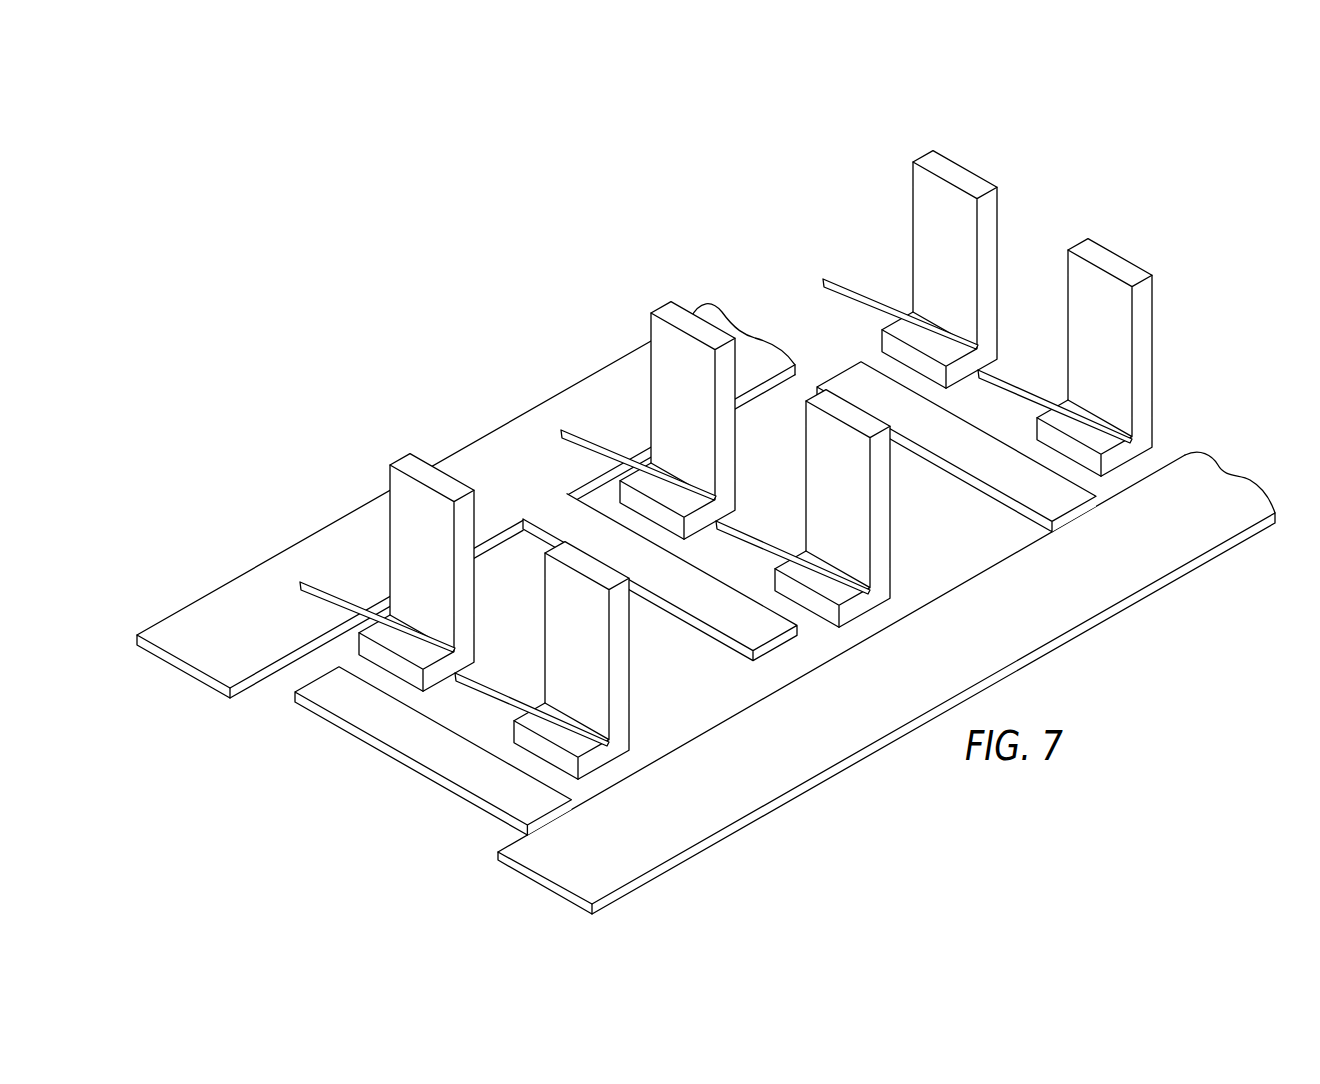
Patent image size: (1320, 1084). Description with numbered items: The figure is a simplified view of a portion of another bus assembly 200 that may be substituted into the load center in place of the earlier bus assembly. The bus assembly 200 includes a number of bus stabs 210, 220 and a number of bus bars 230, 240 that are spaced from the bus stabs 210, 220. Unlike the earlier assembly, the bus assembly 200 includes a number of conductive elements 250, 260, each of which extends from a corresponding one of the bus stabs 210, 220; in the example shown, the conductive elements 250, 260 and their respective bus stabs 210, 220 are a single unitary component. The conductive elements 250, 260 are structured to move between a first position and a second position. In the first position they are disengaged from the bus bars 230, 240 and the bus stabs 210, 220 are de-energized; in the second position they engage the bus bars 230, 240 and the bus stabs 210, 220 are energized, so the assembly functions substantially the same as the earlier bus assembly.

The bus assembly 200 is at (697, 515).
The bus stab 210 is at (623, 677).
The bus stab 220 is at (408, 462).
The bus bar 230 is at (200, 685).
The bus bar 240 is at (548, 864).
The conductive element 250 is at (353, 597).
The conductive element 260 is at (493, 690).